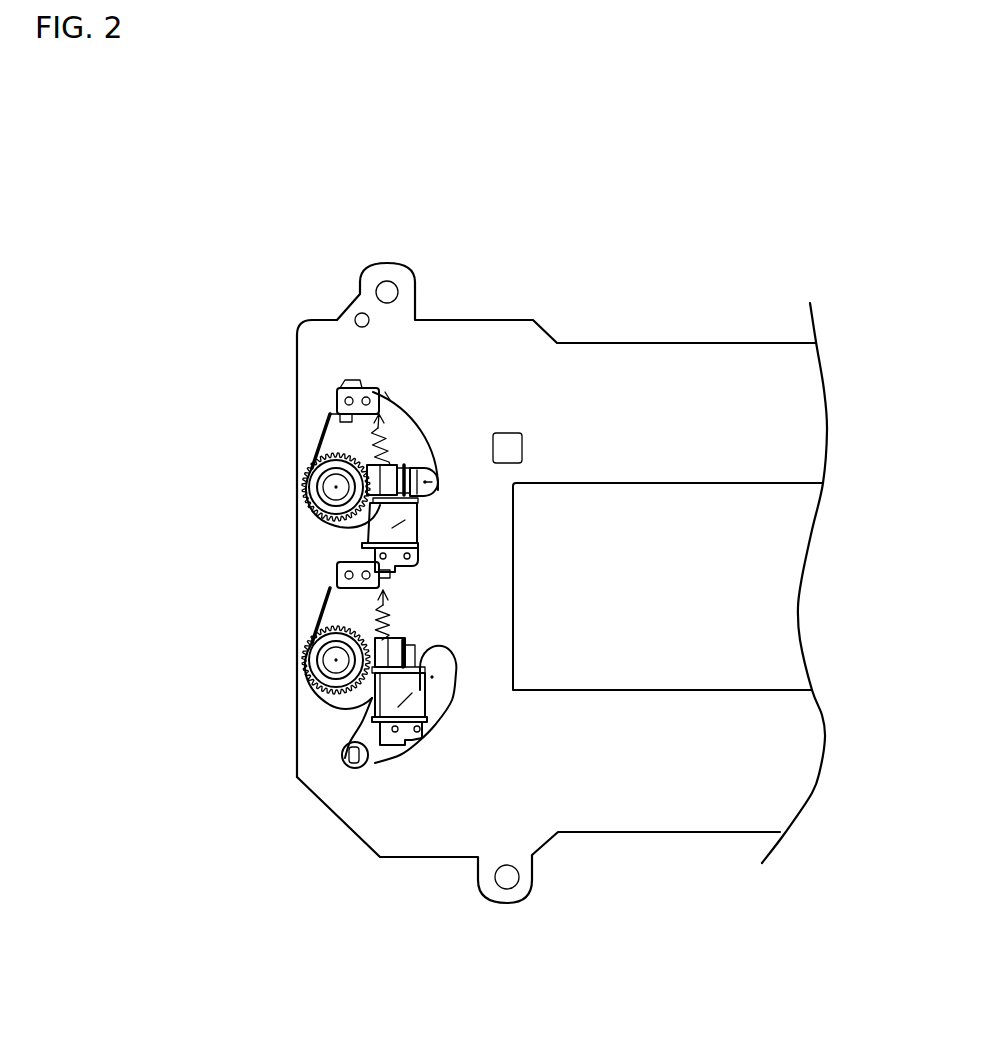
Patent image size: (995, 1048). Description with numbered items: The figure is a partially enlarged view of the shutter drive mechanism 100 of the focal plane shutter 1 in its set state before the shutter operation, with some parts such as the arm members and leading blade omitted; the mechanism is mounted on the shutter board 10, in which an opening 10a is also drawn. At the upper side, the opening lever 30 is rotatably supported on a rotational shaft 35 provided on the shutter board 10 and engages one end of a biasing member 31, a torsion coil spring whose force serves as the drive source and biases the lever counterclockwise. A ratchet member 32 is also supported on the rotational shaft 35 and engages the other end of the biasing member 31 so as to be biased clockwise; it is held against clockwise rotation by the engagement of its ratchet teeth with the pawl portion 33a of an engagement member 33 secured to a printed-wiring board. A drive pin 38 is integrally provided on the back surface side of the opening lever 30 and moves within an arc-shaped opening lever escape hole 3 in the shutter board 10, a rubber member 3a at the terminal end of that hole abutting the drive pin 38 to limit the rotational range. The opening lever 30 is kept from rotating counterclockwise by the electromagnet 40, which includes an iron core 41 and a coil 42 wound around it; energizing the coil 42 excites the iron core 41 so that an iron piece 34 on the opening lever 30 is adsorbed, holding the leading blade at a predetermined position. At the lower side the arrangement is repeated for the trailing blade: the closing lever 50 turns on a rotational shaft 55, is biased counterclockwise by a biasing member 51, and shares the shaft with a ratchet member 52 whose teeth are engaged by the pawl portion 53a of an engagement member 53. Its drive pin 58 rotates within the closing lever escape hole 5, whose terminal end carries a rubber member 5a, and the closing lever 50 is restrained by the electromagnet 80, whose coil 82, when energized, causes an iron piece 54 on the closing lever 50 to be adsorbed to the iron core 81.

The focal plane shutter 1 is at (258, 301).
The shutter drive mechanism 100 is at (165, 547).
The shutter board 10 is at (698, 403).
The opening in frame plate 10a is at (686, 508).
The opening lever escape hole 3 is at (390, 412).
The rubber member 3a is at (360, 390).
The opening lever 30 is at (339, 472).
The biasing member 31 is at (400, 438).
The ratchet member 32 is at (330, 487).
The engagement member 33 is at (337, 390).
The pawl portion 33a is at (322, 420).
The iron piece 34 is at (405, 472).
The rotational shaft 35 is at (300, 472).
The drive pin 38 is at (440, 484).
The electromagnet 40 is at (418, 565).
The iron core 41 is at (418, 518).
The coil 42 is at (395, 533).
The closing lever escape hole 5 is at (383, 770).
The rubber member 5a is at (448, 662).
The closing lever 50 is at (337, 690).
The biasing member 51 is at (385, 622).
The ratchet member 52 is at (328, 661).
The engagement member 53 is at (337, 568).
The pawl portion 53a is at (322, 597).
The iron piece 54 is at (408, 645).
The rotational shaft 55 is at (300, 650).
The drive pin 58 is at (368, 775).
The electromagnet 80 is at (410, 740).
The iron core 81 is at (428, 690).
The coil 82 is at (420, 712).